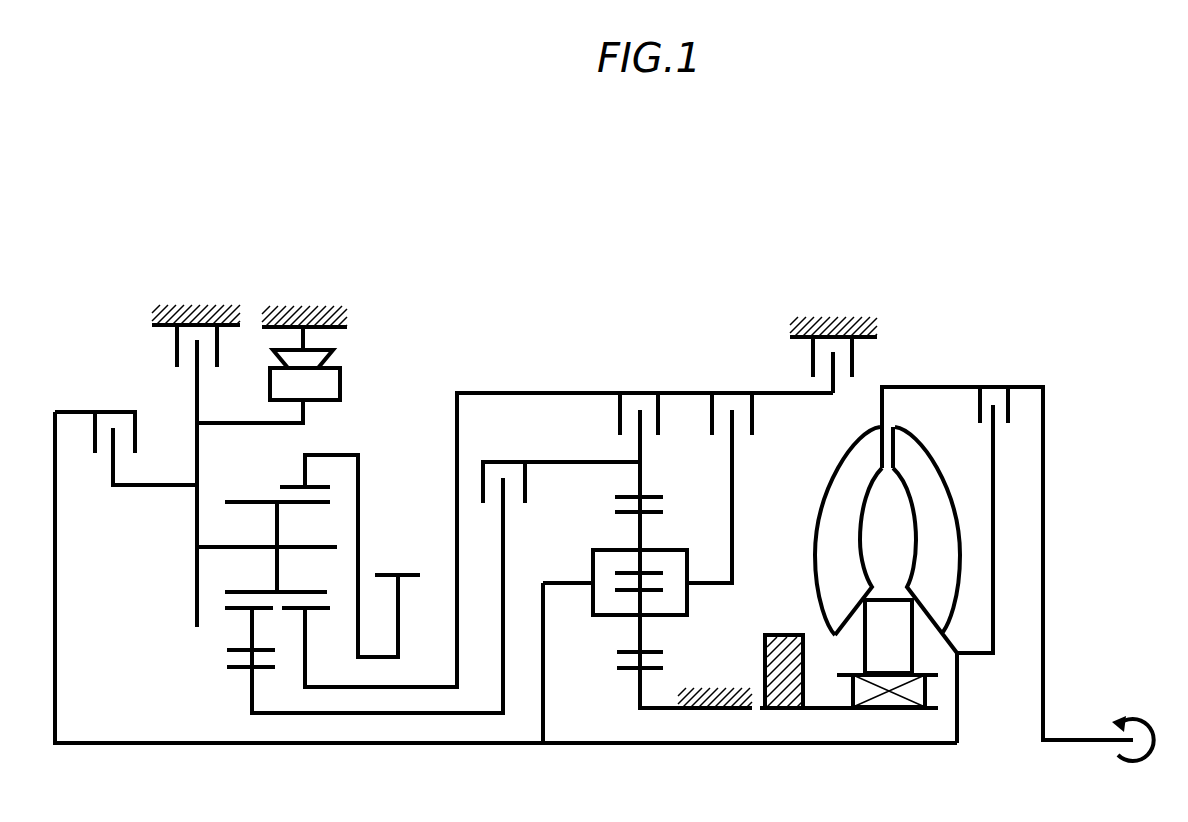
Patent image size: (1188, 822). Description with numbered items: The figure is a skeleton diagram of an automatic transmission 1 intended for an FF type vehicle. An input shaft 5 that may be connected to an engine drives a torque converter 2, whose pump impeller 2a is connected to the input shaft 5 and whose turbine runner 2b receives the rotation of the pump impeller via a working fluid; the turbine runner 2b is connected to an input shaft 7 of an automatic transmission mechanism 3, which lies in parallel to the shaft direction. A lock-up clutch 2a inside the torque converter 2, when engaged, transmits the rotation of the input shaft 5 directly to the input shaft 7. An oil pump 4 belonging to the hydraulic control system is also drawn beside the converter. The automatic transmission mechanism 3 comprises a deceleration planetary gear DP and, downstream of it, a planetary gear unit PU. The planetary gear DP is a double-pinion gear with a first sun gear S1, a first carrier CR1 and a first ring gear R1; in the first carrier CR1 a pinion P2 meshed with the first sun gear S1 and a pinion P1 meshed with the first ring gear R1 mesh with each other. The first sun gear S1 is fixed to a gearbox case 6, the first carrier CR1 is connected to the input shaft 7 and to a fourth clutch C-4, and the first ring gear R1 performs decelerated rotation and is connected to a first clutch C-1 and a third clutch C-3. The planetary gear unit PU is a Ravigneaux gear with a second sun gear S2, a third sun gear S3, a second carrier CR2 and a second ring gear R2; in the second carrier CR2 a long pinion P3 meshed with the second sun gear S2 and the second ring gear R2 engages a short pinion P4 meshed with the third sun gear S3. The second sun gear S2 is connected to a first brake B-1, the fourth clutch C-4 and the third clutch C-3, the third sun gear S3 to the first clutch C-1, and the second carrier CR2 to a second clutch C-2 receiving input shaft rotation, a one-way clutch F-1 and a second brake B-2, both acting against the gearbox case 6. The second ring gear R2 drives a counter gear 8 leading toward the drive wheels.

The automatic transmission 1 is at (586, 225).
The torque converter 2 is at (935, 380).
The pump impeller / lock-up clutch 2a is at (838, 460).
The turbine runner 2b is at (940, 462).
The automatic transmission mechanism 3 is at (395, 345).
The oil pump 4 is at (775, 635).
The input shaft of the automatic transmission 5 is at (1062, 735).
The gearbox case 6 is at (715, 688).
The input shaft of the automatic transmission mechanism 7 is at (912, 745).
The counter gear 8 is at (412, 575).
The first brake B-1 is at (833, 341).
The second brake B-2 is at (196, 323).
The one-way clutch F-1 is at (272, 351).
The first clutch C-1 is at (561, 468).
The second clutch C-2 is at (126, 435).
The third clutch C-3 is at (685, 535).
The fourth clutch C-4 is at (719, 473).
The planetary gear unit PU is at (174, 553).
The planetary gear (deceleration planetary gear) DP is at (705, 535).
The first carrier CR1 is at (673, 550).
The second carrier CR2 is at (197, 528).
The first sun gear S1 is at (617, 667).
The second sun gear S2 is at (312, 610).
The third sun gear S3 is at (232, 665).
The pinion P1 is at (615, 512).
The pinion P2 is at (617, 652).
The long pinion P3 is at (240, 502).
The short pinion P4 is at (232, 650).
The first ring gear R1 is at (615, 497).
The second ring gear R2 is at (288, 485).